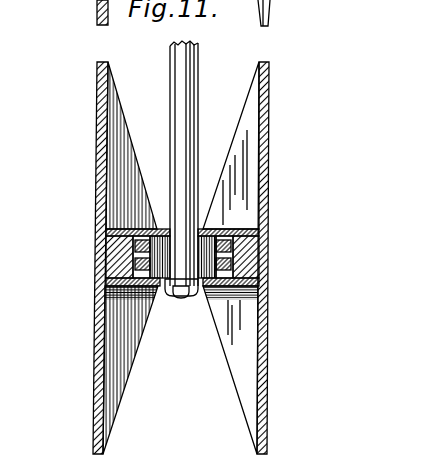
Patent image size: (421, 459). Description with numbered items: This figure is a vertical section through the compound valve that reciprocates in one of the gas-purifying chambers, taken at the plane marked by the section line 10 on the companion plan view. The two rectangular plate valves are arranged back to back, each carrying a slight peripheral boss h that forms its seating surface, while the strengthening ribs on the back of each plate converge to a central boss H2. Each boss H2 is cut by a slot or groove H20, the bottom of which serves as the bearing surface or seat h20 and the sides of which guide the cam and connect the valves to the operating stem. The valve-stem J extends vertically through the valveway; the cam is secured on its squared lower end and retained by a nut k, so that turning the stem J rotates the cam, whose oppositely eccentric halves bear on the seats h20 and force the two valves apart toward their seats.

The peripheral boss h is at (97, 18).
The valve-stem J is at (212, 97).
The section line 10 is at (98, 232).
The bearing surface or seat h20 is at (292, 250).
The boss H2 is at (277, 279).
The slot or groove H20 is at (158, 287).
The nut k is at (170, 290).